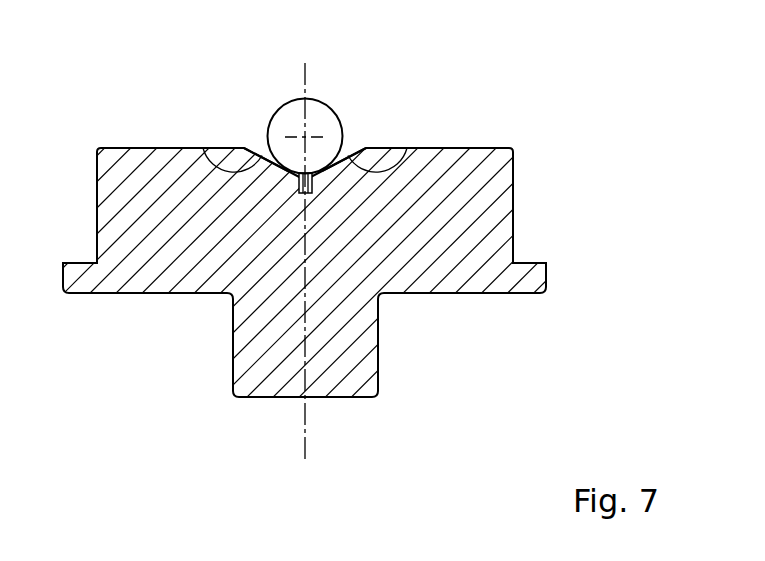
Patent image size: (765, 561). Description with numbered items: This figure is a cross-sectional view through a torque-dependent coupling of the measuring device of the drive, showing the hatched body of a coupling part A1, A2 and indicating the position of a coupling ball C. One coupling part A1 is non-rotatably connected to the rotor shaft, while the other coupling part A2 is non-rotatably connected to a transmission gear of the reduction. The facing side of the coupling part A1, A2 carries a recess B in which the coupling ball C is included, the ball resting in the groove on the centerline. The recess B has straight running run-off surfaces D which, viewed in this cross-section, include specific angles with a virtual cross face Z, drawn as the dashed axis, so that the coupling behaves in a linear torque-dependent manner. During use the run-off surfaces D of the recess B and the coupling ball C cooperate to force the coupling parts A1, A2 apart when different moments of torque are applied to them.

The coupling part A1 is at (382, 280).
The coupling part A2 is at (520, 195).
The recess B is at (256, 146).
The coupling ball C is at (315, 118).
The run-off surface D is at (203, 148).
The cross face Z is at (301, 442).